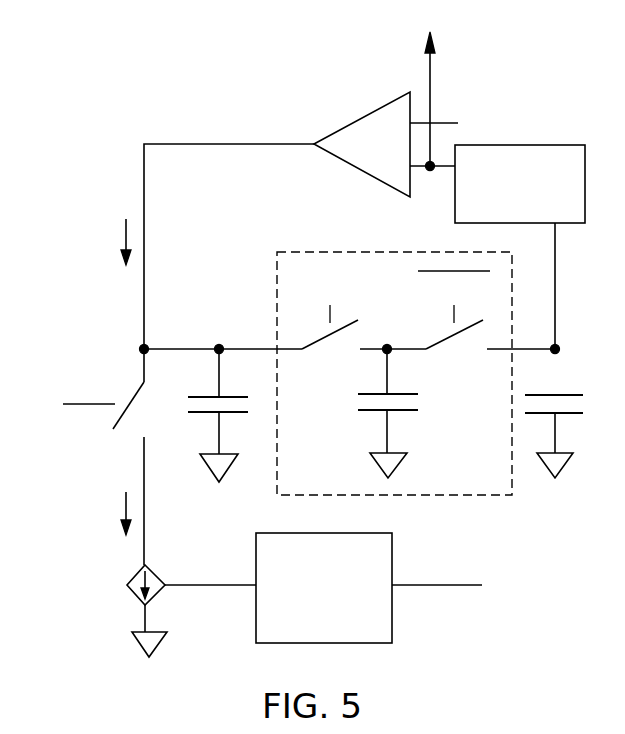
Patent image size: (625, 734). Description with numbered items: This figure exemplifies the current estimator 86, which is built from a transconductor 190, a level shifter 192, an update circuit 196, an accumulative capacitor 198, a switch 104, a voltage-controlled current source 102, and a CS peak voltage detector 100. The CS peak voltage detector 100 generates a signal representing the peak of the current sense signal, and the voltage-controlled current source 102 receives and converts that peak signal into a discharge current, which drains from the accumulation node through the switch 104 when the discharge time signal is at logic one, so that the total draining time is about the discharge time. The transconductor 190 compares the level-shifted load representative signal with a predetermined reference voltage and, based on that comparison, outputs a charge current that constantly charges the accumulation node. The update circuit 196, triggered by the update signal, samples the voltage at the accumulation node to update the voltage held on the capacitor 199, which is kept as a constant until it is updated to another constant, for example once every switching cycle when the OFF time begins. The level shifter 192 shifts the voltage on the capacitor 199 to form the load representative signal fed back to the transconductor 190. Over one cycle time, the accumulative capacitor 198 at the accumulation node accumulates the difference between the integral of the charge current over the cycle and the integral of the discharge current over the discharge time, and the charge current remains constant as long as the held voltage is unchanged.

The current estimator 86 is at (264, 84).
The transconductor 190 is at (372, 181).
The level shifter 192 is at (508, 204).
The update circuit 196 is at (327, 477).
The accumulative capacitor 198 is at (209, 414).
The capacitor 199 is at (565, 399).
The switch 104 is at (123, 391).
The voltage-controlled current source 102 is at (128, 583).
The CS peak voltage detector 100 is at (311, 611).